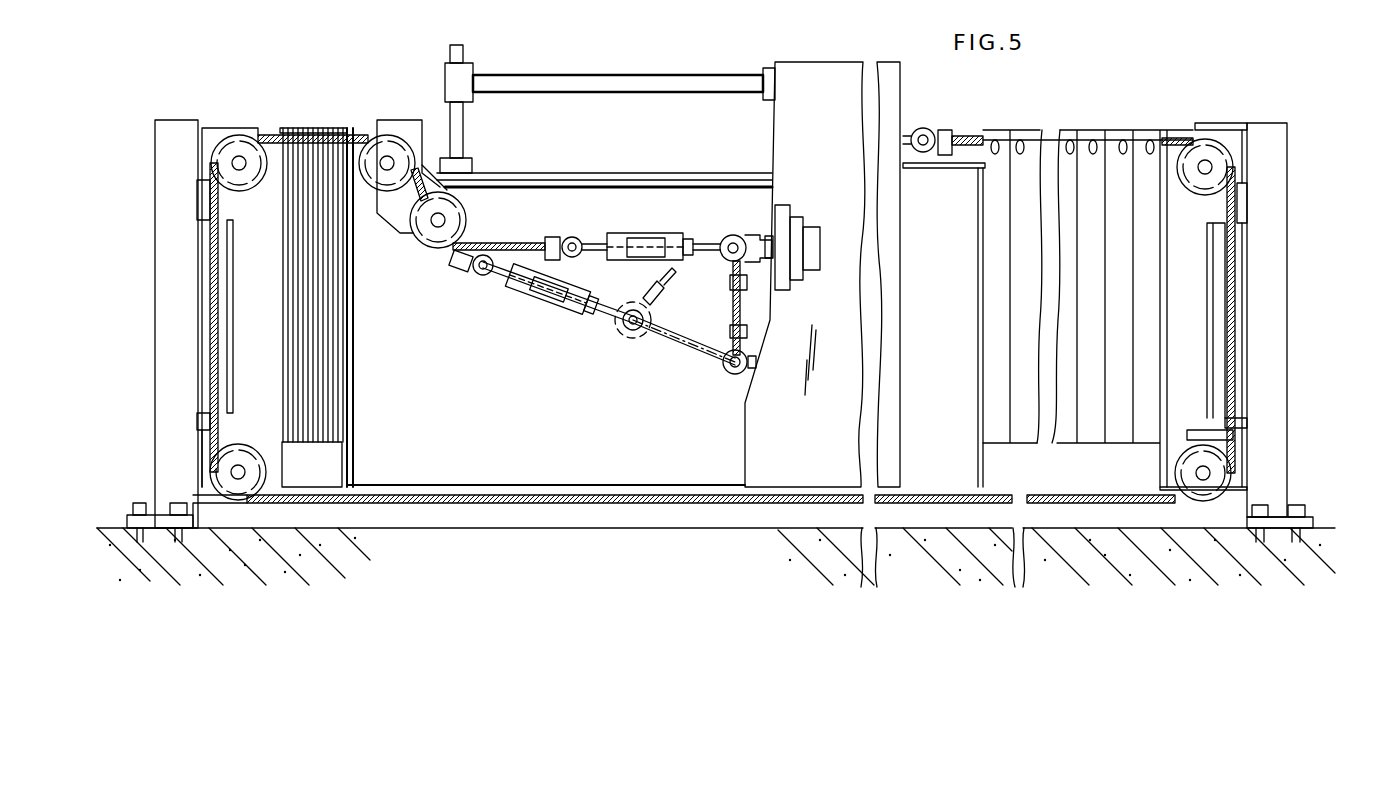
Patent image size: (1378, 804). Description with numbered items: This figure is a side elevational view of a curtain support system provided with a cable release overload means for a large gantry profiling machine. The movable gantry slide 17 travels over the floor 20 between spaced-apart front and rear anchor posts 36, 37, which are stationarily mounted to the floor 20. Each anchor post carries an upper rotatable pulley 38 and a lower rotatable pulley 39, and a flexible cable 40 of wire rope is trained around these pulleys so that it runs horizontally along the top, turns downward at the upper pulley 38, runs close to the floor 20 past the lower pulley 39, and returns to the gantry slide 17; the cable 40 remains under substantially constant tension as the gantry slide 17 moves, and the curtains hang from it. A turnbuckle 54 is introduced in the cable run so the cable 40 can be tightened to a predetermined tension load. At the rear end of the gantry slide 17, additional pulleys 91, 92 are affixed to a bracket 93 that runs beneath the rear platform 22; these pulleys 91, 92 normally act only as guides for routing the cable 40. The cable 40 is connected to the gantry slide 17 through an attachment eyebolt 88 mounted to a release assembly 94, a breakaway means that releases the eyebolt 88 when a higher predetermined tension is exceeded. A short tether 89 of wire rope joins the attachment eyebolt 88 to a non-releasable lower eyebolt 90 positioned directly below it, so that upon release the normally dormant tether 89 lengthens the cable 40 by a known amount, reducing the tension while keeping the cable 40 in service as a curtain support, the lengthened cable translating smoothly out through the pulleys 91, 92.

The gantry slide 17 is at (822, 166).
The floor 20 is at (342, 528).
The rear platform 22 is at (550, 186).
The front anchor post 36 is at (1287, 212).
The rear anchor post 37 is at (155, 150).
The upper rotatable pulley 38 is at (227, 137).
The lower rotatable pulley 39 is at (220, 493).
The flexible cable 40 is at (268, 133).
The turnbuckle 54 is at (643, 230).
The attachment eyebolt 88 is at (733, 235).
The tether 89 is at (730, 308).
The lower eyebolt 90 is at (727, 372).
The additional pulley 91 is at (405, 135).
The additional pulley 92 is at (472, 208).
The bracket 93 is at (405, 237).
The release assembly 94 is at (778, 203).